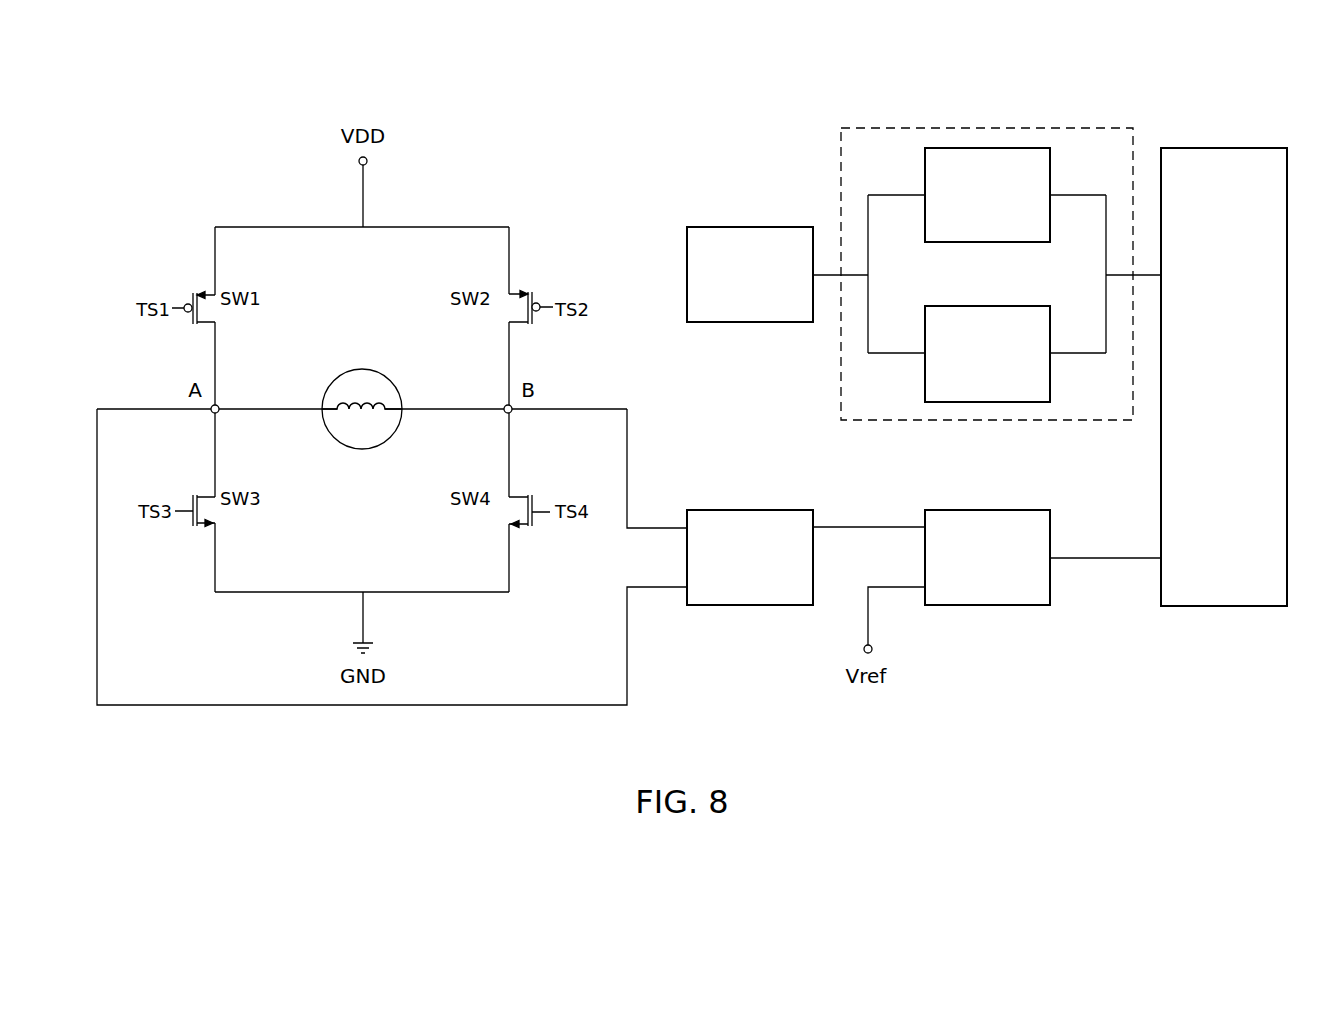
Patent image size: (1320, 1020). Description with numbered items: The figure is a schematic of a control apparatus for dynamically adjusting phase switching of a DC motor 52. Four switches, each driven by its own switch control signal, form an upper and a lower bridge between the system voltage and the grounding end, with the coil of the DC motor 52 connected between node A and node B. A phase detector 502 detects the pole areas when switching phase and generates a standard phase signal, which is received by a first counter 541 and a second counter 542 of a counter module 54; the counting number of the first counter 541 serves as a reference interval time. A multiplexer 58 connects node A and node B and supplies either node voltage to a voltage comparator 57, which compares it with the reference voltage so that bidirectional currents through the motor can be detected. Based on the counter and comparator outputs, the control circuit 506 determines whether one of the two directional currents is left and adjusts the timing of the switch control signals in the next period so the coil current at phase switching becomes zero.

The DC motor 52 is at (362, 369).
The phase detector 502 is at (750, 227).
The counter module 54 is at (1082, 128).
The first counter 541 is at (985, 148).
The second counter 542 is at (985, 402).
The control circuit 506 is at (1222, 148).
The multiplexer 58 is at (750, 605).
The voltage comparator 57 is at (985, 605).